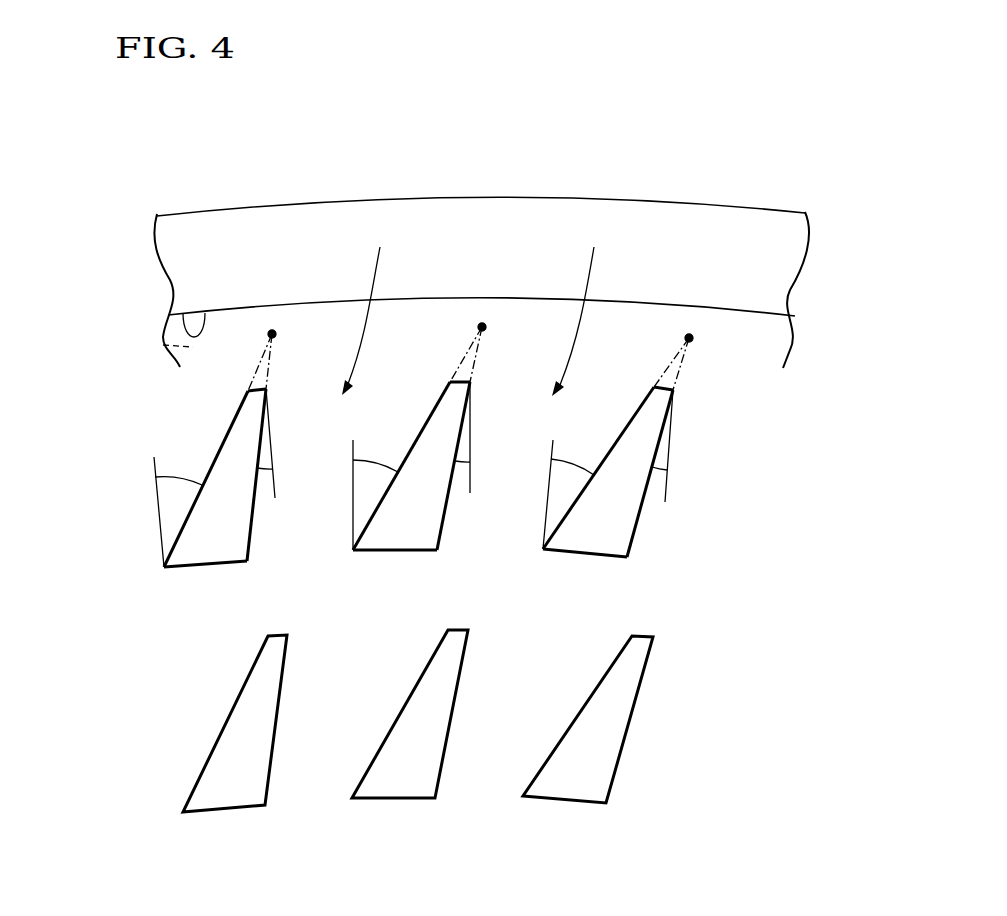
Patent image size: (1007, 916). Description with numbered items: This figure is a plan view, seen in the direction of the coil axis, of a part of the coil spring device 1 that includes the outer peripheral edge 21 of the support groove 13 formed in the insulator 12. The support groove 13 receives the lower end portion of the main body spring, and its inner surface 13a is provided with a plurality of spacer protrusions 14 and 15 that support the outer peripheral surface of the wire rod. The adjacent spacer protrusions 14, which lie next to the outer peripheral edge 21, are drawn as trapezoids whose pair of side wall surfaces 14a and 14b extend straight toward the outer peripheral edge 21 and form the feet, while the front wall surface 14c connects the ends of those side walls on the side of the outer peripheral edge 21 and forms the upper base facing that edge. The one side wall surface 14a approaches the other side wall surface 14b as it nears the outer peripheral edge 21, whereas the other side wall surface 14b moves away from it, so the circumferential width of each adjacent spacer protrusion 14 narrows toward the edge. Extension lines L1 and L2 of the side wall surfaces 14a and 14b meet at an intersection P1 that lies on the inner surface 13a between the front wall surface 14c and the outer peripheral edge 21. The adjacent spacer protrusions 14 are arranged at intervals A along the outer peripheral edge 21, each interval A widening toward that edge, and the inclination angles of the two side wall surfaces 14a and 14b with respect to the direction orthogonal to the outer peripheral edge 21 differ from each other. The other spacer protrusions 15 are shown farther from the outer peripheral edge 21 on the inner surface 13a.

The coil spring device 1 is at (806, 169).
The insulator 12 is at (375, 201).
The support groove 13 is at (223, 315).
The inner surface of the support groove 13a is at (163, 345).
The adjacent spacer protrusion 14 is at (203, 563).
The one side wall surface 14a is at (228, 432).
The other side wall surface 14b is at (252, 527).
The front wall surface 14c is at (252, 388).
The spacer protrusion 15 is at (222, 810).
The outer peripheral edge 21 is at (183, 313).
The intersection P1 is at (272, 334).
The extension line L1 is at (252, 378).
The extension line L2 is at (272, 357).
The interval A is at (473, 307).